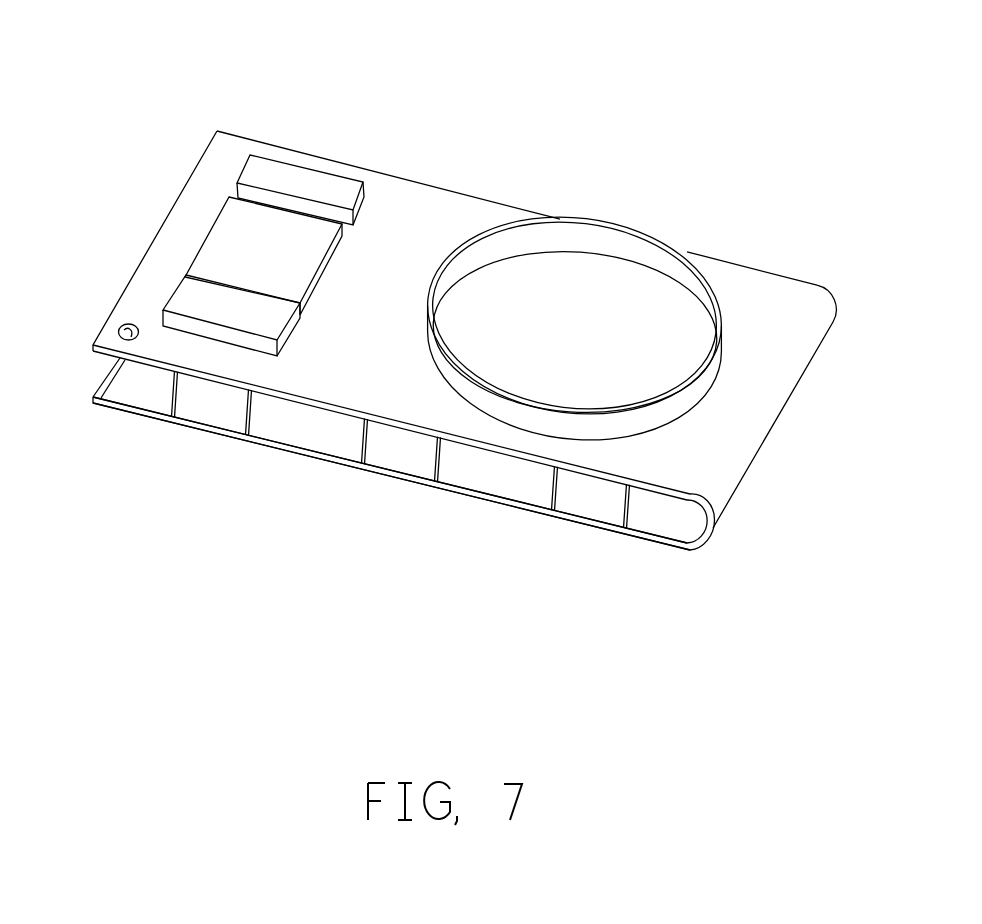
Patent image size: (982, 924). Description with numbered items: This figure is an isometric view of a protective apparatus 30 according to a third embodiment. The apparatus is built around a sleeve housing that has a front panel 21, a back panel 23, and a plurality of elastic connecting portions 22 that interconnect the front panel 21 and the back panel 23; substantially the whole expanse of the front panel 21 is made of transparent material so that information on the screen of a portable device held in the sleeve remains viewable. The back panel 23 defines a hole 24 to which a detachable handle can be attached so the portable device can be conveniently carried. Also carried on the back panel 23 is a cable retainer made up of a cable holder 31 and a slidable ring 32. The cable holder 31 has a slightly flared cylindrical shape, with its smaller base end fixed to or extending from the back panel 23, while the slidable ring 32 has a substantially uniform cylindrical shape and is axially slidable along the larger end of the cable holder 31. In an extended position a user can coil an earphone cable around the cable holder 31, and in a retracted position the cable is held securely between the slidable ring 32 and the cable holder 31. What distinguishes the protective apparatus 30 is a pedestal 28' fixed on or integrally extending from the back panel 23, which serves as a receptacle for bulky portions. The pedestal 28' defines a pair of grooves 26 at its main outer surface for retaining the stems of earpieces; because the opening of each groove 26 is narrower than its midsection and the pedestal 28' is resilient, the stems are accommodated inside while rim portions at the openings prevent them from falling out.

The protective apparatus 30 is at (512, 34).
The front panel 21 is at (121, 389).
The elastic connecting portions 22 is at (405, 458).
The back panel 23 is at (523, 458).
The hole 24 is at (123, 323).
The grooves 26 is at (242, 191).
The pedestal 28' is at (292, 217).
The cable holder 31 is at (608, 252).
The slidable ring 32 is at (675, 403).